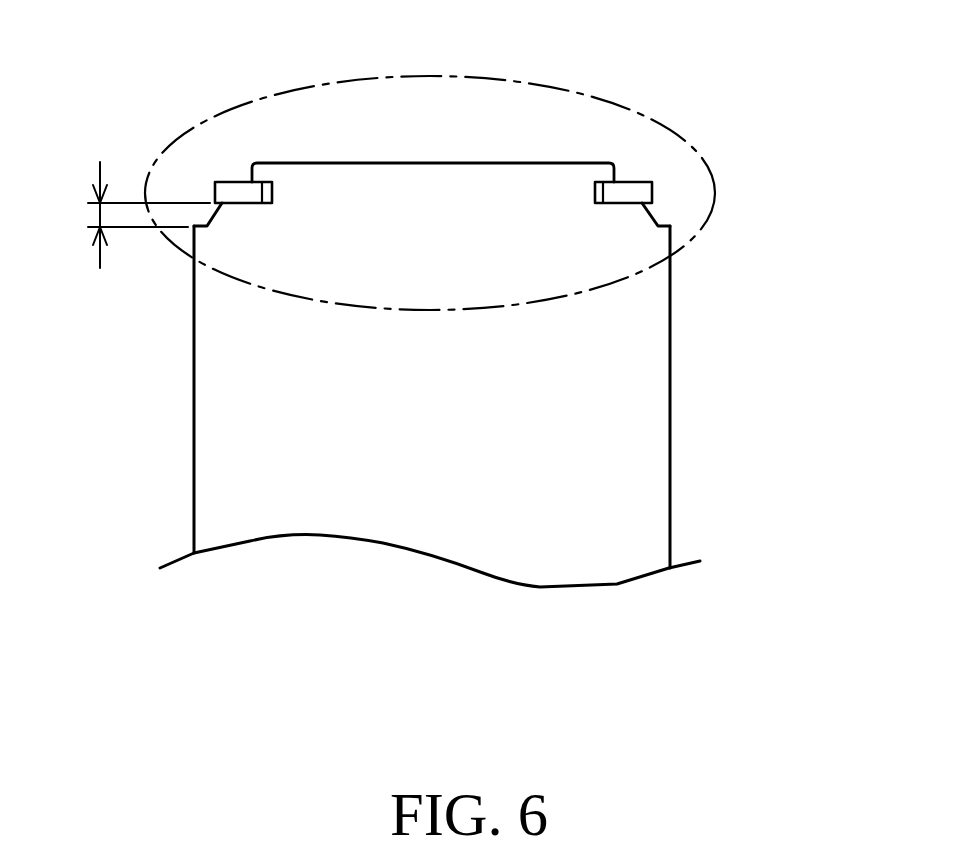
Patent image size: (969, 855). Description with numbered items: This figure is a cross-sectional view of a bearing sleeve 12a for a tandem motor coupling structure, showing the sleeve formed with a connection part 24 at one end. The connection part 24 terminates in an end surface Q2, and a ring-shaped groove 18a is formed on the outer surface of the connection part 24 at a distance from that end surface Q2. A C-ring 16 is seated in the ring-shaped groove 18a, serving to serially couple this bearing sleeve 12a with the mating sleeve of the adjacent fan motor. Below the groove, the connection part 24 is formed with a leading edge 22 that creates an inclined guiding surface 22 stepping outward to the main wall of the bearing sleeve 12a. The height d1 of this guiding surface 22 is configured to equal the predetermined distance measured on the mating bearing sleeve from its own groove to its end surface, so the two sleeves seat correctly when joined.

The bearing sleeve 12a is at (670, 408).
The leading edge (inclined guiding surface) 22 is at (658, 213).
The C-ring 16 is at (653, 192).
The ring-shaped groove 18a is at (607, 193).
The end surface Q2 is at (342, 163).
The connection part 24 is at (545, 84).
The height of the guiding surface d1 is at (126, 215).